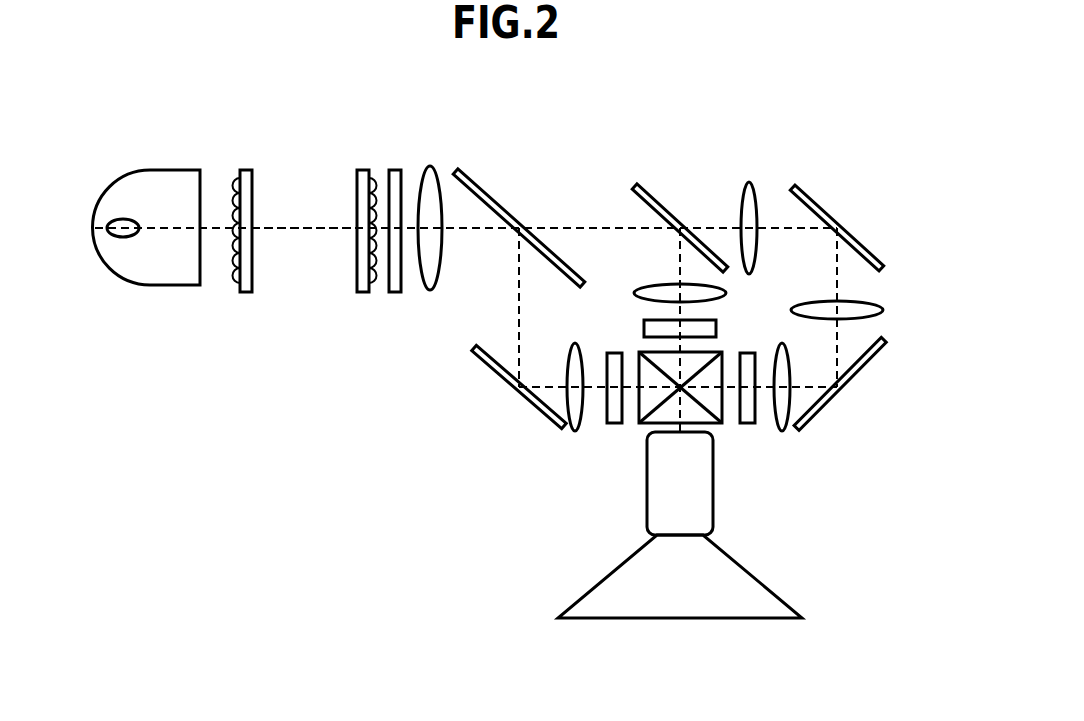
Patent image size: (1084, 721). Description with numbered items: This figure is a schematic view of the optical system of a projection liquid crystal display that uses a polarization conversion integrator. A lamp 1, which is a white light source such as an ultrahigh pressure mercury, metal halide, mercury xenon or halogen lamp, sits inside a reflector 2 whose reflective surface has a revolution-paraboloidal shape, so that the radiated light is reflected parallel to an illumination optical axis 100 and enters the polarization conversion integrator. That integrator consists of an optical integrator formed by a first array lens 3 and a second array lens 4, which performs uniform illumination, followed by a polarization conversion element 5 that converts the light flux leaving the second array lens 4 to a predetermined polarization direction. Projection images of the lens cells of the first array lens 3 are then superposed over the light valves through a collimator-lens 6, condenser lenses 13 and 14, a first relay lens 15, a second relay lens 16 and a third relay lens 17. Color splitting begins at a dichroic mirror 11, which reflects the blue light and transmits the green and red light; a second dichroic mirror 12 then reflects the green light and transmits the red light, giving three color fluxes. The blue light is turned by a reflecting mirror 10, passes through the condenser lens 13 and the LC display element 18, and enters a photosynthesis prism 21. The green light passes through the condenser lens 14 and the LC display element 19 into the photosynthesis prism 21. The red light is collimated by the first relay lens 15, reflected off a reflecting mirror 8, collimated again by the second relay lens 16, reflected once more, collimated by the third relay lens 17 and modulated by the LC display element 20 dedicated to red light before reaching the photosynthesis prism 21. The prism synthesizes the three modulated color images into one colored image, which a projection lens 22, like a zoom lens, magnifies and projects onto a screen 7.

The lamp 1 is at (141, 216).
The reflector 2 is at (123, 268).
The first array lens 3 is at (246, 173).
The second array lens 4 is at (362, 172).
The polarization conversion element 5 is at (396, 291).
The collimator-lens 6 is at (432, 171).
The screen 7 is at (780, 618).
The reflecting mirror 8 is at (815, 191).
The reflecting mirror 10 is at (511, 392).
The dichroic mirror 11 is at (475, 179).
The dichroic mirror 12 is at (666, 203).
The condenser lens 13 is at (571, 431).
The condenser lens 14 is at (642, 286).
The first relay lens 15 is at (750, 184).
The second relay lens 16 is at (878, 304).
The third relay lens 17 is at (784, 432).
The LC display element 18 is at (612, 425).
The LC display element 19 is at (644, 322).
The LC display element 20 is at (746, 424).
The photosynthesis prism 21 is at (652, 421).
The projection lens 22 is at (715, 511).
The illumination optical axis 100 is at (312, 232).